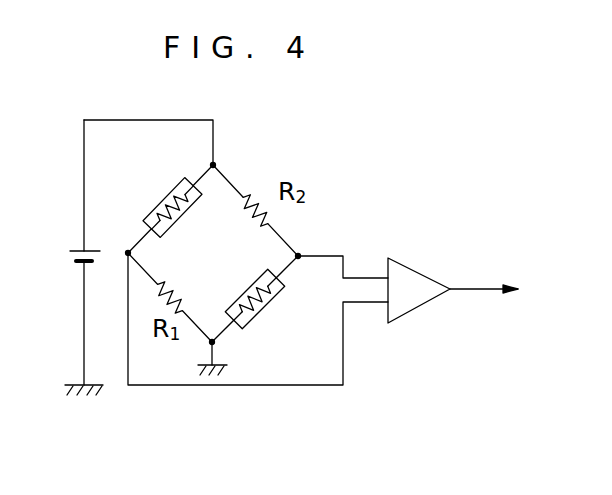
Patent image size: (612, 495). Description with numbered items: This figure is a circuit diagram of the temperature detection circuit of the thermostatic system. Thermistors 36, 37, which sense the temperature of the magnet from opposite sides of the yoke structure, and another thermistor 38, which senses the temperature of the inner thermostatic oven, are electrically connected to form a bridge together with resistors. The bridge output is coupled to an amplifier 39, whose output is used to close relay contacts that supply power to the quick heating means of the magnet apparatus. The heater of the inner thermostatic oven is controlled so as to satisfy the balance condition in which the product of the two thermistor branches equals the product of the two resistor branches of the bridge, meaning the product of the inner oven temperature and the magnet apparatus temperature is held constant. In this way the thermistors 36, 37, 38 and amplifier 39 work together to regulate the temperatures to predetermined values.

The thermistor 36 is at (167, 209).
The thermistor 37 is at (150, 211).
The thermistor 38 is at (255, 321).
The amplifier 39 is at (412, 266).